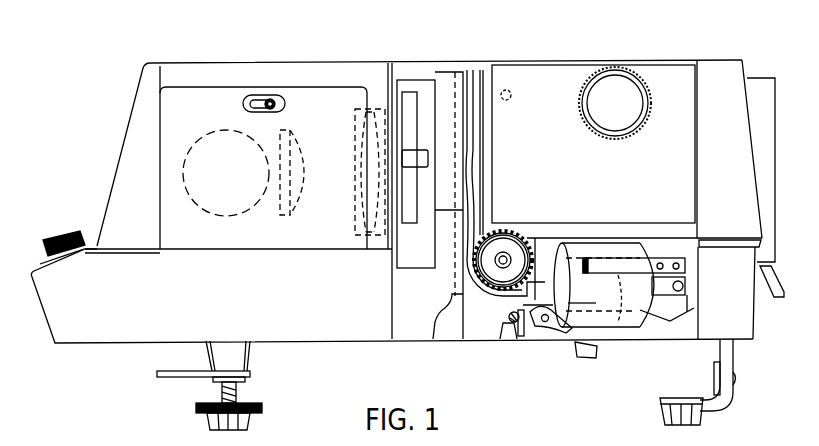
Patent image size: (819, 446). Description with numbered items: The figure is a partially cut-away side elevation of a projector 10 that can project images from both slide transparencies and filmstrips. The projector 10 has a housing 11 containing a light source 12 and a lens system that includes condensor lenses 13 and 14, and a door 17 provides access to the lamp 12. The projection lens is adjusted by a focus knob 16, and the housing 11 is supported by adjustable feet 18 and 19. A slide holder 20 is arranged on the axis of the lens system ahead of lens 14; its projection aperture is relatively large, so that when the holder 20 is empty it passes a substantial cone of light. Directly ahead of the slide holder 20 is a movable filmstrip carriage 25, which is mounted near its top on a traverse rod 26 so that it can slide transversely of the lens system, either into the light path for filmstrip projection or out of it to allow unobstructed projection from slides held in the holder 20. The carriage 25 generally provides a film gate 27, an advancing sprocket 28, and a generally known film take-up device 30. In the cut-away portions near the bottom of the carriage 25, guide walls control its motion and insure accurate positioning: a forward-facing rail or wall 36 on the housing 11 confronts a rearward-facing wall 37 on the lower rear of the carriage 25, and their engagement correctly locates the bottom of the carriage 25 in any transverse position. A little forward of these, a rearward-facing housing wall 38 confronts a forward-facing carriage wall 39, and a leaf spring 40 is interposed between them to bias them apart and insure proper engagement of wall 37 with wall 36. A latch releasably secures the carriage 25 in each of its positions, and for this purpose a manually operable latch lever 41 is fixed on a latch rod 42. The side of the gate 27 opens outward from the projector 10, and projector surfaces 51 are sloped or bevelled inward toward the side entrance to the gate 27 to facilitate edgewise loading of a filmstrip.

The projector 10 is at (514, 51).
The housing 11 is at (124, 307).
The light source 12 is at (213, 140).
The condensor lens 13 is at (300, 142).
The condensor lens 14 is at (360, 198).
The focus knob 16 is at (626, 125).
The door 17 is at (191, 228).
The adjustable foot 18 is at (250, 420).
The adjustable foot 19 is at (660, 418).
The slide holder 20 is at (420, 80).
The filmstrip carriage 25 is at (500, 166).
The traverse rod 26 is at (512, 95).
The film gate 27 is at (484, 196).
The advancing sprocket 28 is at (520, 235).
The film take-up device 30 is at (639, 318).
The forward-facing rail or wall 36 is at (450, 323).
The rearward-facing wall 37 is at (463, 323).
The rearward-facing housing wall 38 is at (530, 312).
The forward-facing carriage wall 39 is at (514, 330).
The leaf spring 40 is at (524, 340).
The latch lever 41 is at (592, 358).
The latch rod 42 is at (548, 323).
The projector surfaces 51 is at (480, 70).